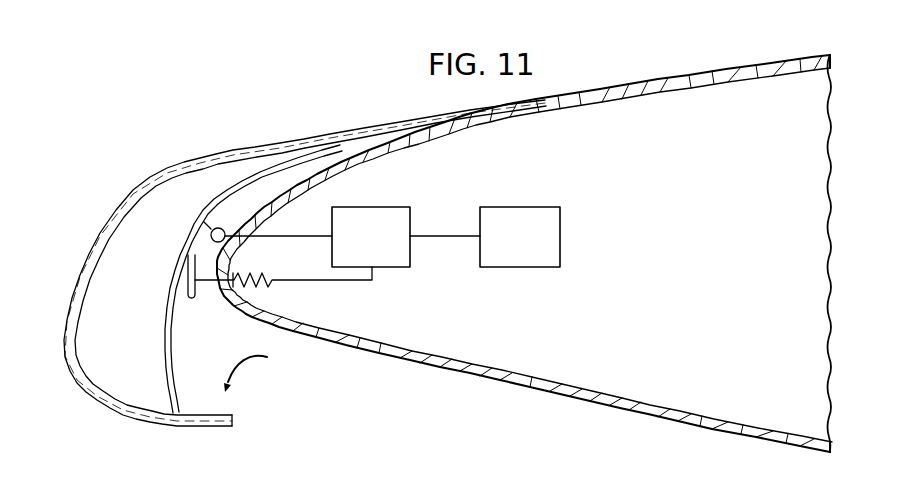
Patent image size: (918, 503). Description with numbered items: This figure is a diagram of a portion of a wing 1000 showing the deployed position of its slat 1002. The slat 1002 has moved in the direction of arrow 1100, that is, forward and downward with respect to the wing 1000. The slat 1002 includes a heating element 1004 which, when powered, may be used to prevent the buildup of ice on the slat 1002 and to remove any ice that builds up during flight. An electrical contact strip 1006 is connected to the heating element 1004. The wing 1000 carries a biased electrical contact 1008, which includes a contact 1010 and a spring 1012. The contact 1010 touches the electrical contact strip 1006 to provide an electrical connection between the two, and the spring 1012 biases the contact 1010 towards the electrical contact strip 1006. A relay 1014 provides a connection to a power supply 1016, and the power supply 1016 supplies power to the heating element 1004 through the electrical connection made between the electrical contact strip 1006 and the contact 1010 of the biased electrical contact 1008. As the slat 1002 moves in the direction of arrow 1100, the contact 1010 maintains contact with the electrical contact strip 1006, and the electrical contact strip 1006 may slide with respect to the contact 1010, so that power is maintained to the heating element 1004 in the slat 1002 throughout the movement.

The wing 1000 is at (708, 68).
The slat 1002 is at (183, 172).
The heating element 1004 is at (137, 402).
The electrical contact strip 1006 is at (165, 307).
The biased electrical contact 1008 is at (238, 265).
The contact 1010 is at (193, 300).
The spring 1012 is at (272, 282).
The relay 1014 is at (398, 268).
The power supply 1016 is at (560, 234).
The arrow 1100 is at (267, 357).